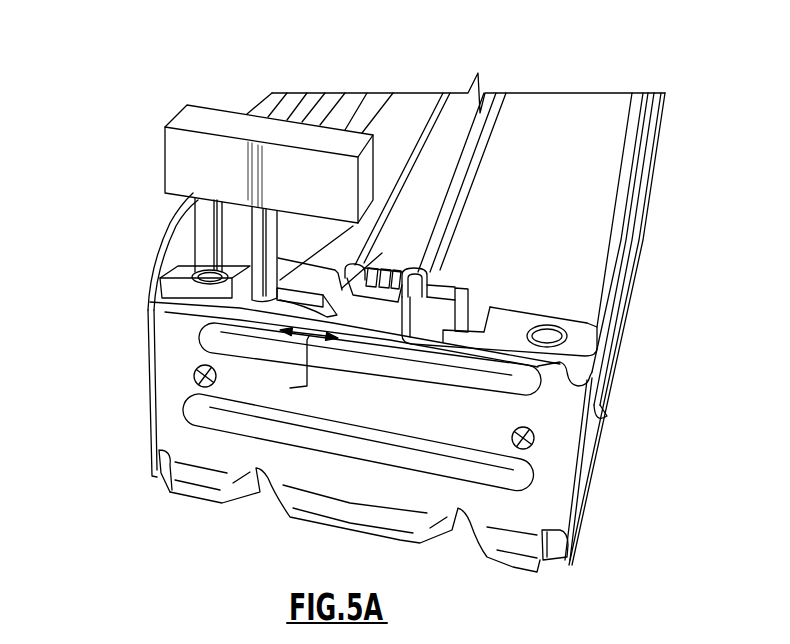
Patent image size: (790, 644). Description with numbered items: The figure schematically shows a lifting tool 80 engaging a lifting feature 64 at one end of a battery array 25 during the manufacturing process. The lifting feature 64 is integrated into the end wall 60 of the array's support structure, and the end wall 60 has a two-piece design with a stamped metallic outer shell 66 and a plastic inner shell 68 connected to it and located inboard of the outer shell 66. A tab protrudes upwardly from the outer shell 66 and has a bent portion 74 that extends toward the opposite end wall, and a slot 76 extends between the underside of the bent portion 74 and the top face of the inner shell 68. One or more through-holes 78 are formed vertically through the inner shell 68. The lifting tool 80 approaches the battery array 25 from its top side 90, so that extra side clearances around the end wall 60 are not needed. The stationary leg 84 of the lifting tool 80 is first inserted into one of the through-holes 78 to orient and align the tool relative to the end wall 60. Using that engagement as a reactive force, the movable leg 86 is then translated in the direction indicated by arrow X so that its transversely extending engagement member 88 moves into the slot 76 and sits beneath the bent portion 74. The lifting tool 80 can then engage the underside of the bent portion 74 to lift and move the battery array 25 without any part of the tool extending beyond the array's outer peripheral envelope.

The battery array 25 is at (115, 338).
The end wall 60 is at (348, 492).
The lifting feature 64 is at (368, 350).
The outer shell 66 is at (540, 523).
The inner shell 68 is at (588, 367).
The bent portion 74 is at (412, 278).
The slot 76 is at (433, 318).
The through-hole 78 is at (199, 285).
The lifting tool 80 is at (217, 128).
The stationary leg 84 is at (200, 262).
The movable leg 86 is at (282, 270).
The engagement member 88 is at (283, 305).
The top side 90 is at (557, 118).